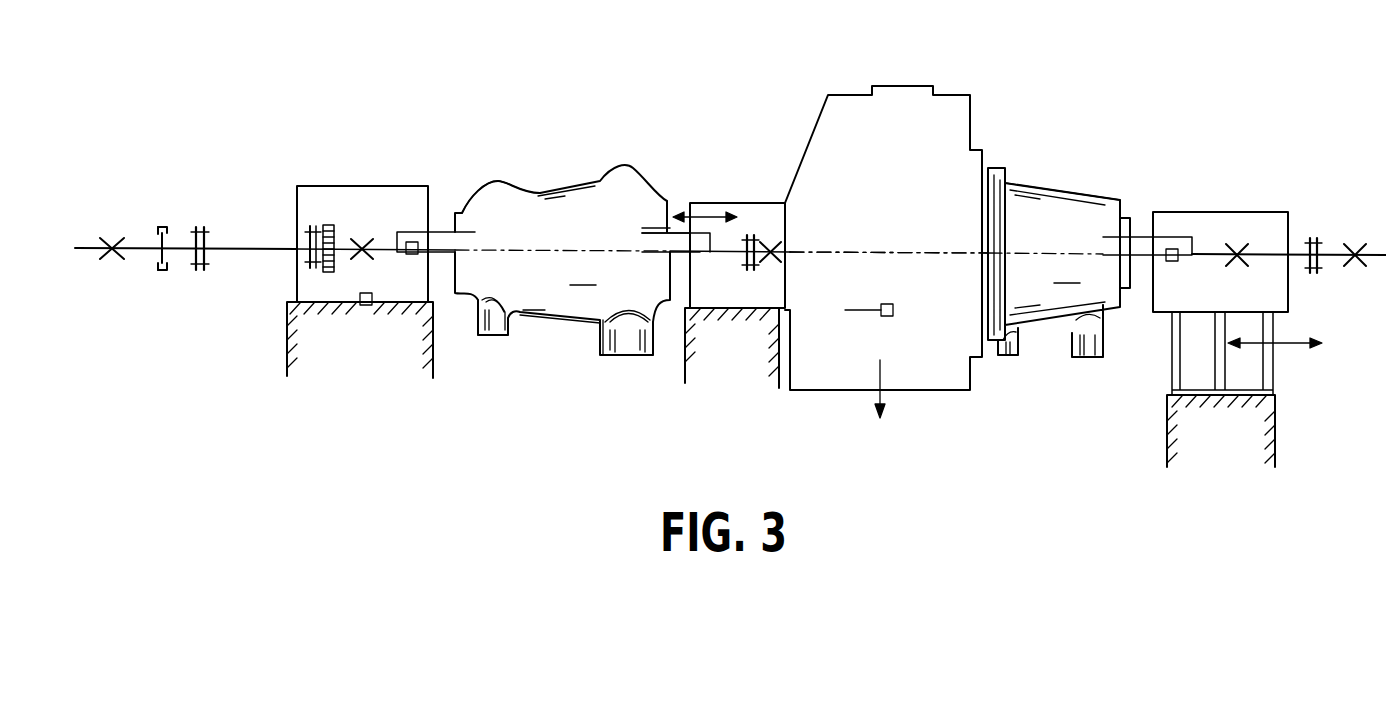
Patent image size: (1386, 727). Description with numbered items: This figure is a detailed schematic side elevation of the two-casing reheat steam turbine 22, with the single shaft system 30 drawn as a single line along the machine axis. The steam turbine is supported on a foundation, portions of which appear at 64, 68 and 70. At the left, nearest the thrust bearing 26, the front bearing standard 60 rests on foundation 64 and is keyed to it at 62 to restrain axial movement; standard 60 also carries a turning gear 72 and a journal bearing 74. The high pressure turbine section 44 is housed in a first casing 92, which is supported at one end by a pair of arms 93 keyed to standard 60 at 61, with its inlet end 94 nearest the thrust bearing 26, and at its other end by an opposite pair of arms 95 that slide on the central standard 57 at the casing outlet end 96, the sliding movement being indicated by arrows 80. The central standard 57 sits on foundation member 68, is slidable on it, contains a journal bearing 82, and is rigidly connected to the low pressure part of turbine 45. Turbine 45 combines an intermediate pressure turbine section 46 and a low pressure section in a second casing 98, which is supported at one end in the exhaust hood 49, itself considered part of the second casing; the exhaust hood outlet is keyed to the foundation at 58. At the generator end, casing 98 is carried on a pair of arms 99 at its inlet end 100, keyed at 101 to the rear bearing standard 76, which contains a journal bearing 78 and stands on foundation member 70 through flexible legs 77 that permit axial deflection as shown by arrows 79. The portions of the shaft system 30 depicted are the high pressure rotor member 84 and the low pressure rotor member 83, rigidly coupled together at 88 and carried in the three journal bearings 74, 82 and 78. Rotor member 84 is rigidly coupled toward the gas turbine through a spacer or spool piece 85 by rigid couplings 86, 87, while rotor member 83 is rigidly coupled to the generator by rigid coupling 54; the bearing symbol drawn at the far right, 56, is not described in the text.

The two-casing reheat steam turbine 22 is at (755, 62).
The thrust bearing 26 is at (153, 228).
The single shaft system 30 is at (150, 256).
The high pressure turbine section 44 is at (576, 260).
The turbine 45 is at (1059, 260).
The intermediate pressure turbine section 46 is at (1082, 196).
The exhaust hood 49 is at (953, 100).
The rigid coupling 54 is at (1311, 238).
The bearing 56 is at (1356, 250).
The central standard 57 is at (738, 203).
The key 58 is at (895, 318).
The front bearing standard 60 is at (350, 186).
The key 61 is at (410, 256).
The key 62 is at (364, 306).
The foundation 64 is at (287, 348).
The foundation member 68 is at (685, 368).
The foundation member 70 is at (1272, 427).
The turning gear 72 is at (328, 226).
The journal bearing 74 is at (362, 241).
The rear bearing standard 76 is at (1200, 212).
The flexible legs 77 is at (1270, 366).
The journal bearing 78 is at (1238, 252).
The arrows 79 is at (1300, 340).
The arrows 80 is at (705, 203).
The journal bearing 82 is at (775, 241).
The low pressure turbine rotor member 83 is at (938, 250).
The high pressure steam turbine rotor member 84 is at (520, 184).
The spool piece 85 is at (239, 244).
The rigid coupling 86 is at (310, 232).
The rigid coupling 87 is at (193, 244).
The rigid coupling 88 is at (751, 236).
The first casing 92 is at (574, 253).
The pair of arms 93 is at (440, 232).
The inlet end 94 is at (483, 336).
The pair of arms 95 is at (652, 228).
The casing outlet end 96 is at (609, 356).
The second casing 98 is at (1063, 253).
The pair of arms 99 is at (1138, 237).
The inlet end 100 is at (1078, 358).
The key 101 is at (1170, 262).